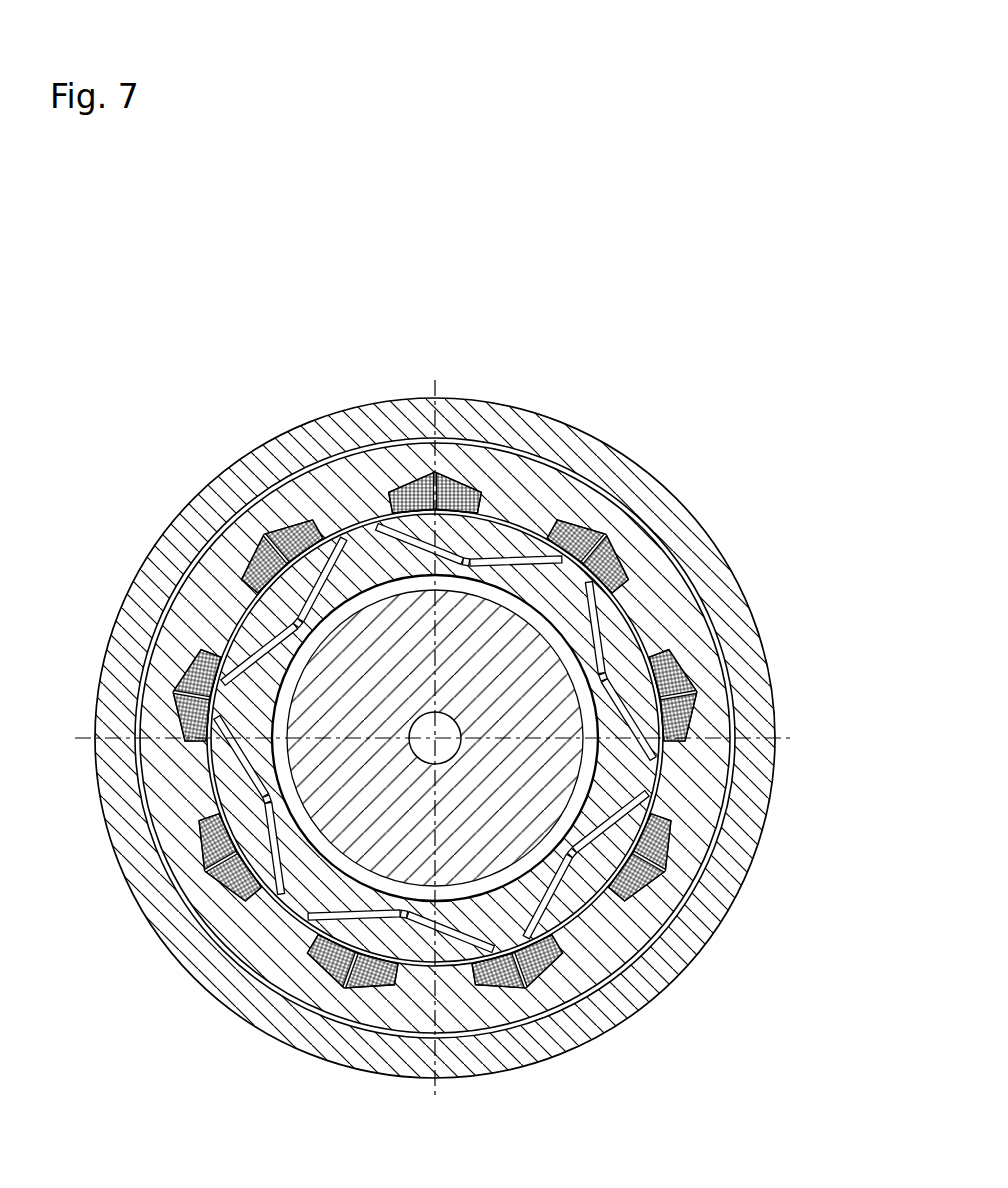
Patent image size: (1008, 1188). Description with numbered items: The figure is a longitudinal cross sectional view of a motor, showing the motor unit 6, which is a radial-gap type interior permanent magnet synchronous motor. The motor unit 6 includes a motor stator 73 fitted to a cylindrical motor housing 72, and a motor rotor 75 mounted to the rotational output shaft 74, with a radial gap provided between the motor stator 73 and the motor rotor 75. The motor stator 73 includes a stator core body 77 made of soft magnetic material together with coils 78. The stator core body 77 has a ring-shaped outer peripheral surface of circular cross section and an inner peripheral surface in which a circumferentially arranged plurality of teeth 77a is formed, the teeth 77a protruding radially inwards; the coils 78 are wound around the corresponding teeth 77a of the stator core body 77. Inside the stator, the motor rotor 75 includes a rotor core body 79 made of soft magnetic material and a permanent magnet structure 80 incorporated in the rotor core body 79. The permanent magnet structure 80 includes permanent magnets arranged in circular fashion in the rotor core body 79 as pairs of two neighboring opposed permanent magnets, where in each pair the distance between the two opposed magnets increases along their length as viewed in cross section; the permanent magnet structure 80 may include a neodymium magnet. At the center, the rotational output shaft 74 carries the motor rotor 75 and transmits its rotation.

The motor unit 6 is at (523, 103).
The motor housing 72 is at (237, 460).
The motor stator 73 is at (458, 87).
The rotational output shaft 74 is at (417, 870).
The motor rotor 75 is at (470, 195).
The stator core body 77 is at (485, 457).
The teeth 77a is at (637, 615).
The coils 78 is at (458, 478).
The rotor core body 79 is at (542, 583).
The permanent magnet structure 80 is at (513, 555).